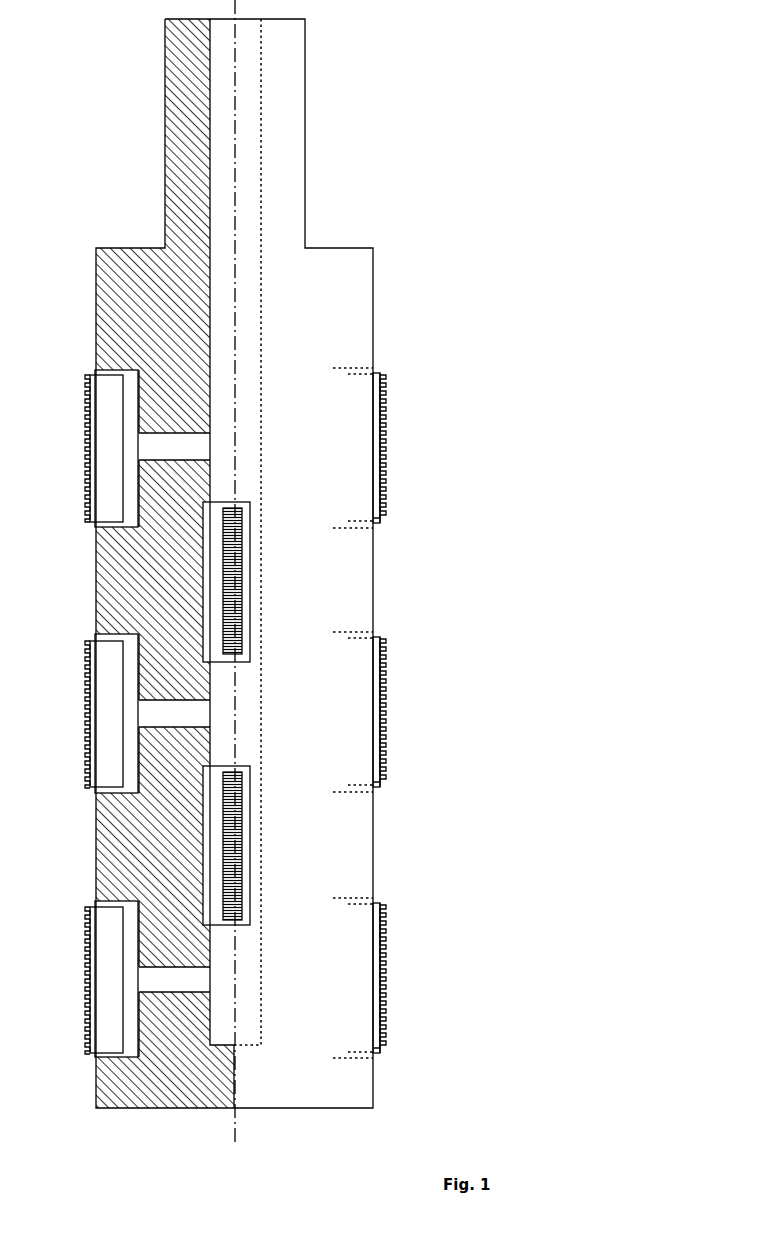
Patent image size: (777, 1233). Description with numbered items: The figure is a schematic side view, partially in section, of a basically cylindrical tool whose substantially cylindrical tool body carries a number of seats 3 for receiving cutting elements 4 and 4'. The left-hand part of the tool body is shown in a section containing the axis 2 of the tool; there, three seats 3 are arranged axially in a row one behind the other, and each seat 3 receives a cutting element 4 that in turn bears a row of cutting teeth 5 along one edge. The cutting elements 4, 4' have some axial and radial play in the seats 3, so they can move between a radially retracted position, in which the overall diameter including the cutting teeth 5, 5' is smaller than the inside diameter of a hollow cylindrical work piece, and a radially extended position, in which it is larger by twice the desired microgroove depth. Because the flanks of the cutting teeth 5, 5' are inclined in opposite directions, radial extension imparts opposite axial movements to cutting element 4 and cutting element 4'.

The axis 2 is at (236, 1120).
The seat 3 is at (132, 520).
The cutting element 4 is at (251, 714).
The cutting teeth 5 is at (66, 714).
The cutting element 4' is at (428, 713).
The cutting teeth 5' is at (420, 711).